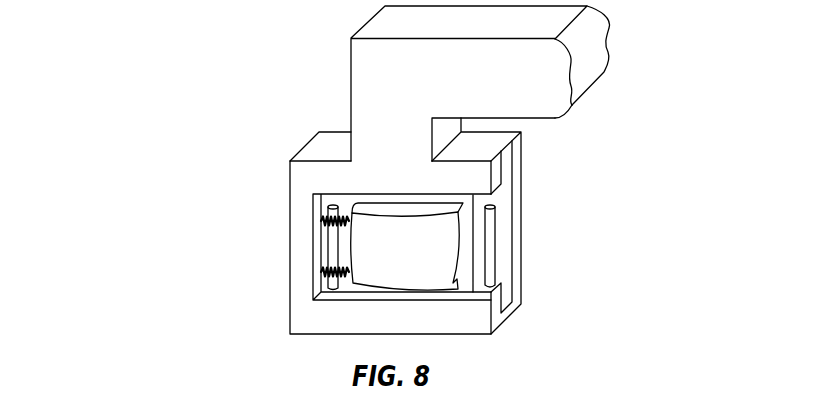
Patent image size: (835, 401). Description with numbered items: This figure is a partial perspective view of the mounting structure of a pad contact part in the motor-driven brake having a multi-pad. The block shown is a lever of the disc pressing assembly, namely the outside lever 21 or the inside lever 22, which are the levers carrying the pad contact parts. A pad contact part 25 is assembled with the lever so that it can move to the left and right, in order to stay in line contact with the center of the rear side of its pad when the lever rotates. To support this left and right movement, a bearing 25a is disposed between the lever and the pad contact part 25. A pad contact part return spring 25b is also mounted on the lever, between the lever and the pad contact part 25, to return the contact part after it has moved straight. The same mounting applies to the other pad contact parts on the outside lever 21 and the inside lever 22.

The outside lever 21 is at (290, 190).
The inside lever 22 is at (364, 170).
The first outside pad contact part 25 is at (443, 262).
The bearing 25a is at (491, 233).
The pad contact part return spring 25b is at (331, 261).